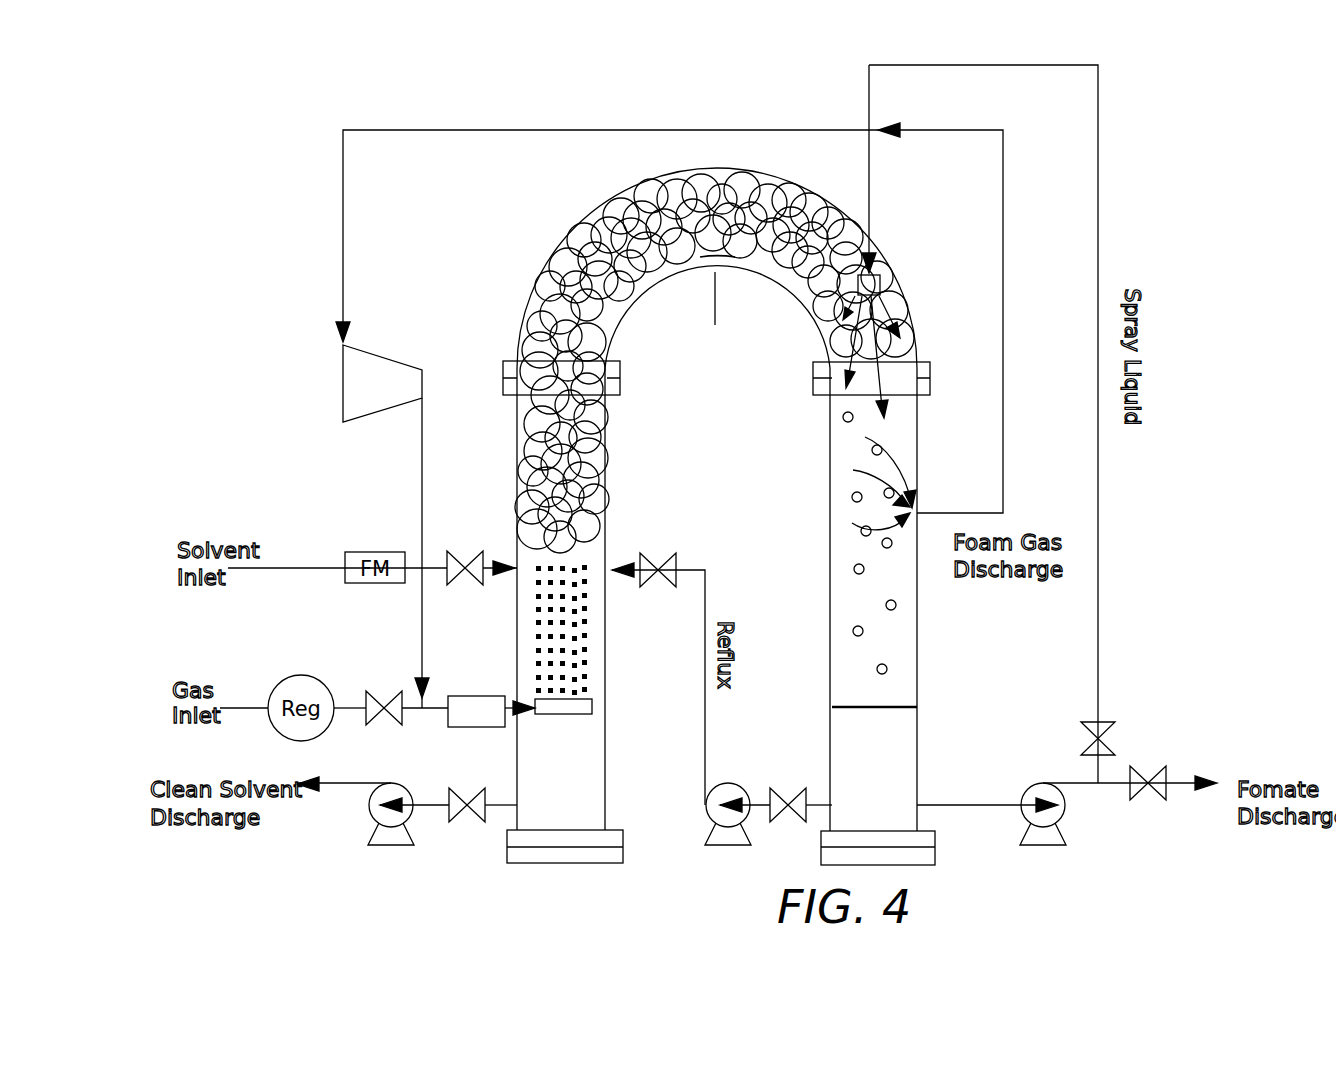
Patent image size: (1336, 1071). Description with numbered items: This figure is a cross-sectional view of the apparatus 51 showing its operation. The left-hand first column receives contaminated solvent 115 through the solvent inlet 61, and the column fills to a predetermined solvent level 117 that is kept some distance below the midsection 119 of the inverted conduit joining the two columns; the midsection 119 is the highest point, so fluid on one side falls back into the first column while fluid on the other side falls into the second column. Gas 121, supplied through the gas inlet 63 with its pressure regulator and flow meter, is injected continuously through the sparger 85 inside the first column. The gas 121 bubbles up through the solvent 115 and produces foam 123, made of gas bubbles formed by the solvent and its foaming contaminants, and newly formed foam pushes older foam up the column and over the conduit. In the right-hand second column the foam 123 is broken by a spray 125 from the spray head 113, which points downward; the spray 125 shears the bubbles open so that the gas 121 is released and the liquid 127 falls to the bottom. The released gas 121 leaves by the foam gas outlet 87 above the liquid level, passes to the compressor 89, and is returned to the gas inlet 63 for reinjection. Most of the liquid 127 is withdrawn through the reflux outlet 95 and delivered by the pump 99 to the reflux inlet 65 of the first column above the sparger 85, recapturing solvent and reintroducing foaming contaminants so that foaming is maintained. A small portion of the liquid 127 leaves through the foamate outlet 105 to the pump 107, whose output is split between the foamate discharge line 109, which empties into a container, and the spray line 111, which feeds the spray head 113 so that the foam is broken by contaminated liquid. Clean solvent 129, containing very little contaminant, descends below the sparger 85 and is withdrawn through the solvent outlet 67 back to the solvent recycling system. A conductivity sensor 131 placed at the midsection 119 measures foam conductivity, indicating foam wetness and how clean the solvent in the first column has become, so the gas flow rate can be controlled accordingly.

The apparatus 51 is at (673, 112).
The solvent inlet 61 is at (505, 580).
The gas inlet 63 is at (512, 698).
The reflux inlet 65 is at (622, 578).
The solvent outlet 67 is at (512, 795).
The sparger 85 is at (572, 715).
The foam gas outlet 87 is at (933, 513).
The compressor 89 is at (368, 345).
The reflux outlet 95 is at (823, 800).
The pump 99 is at (733, 783).
The foamate outlet 105 is at (940, 805).
The pump 107 is at (1033, 783).
The foamate discharge line 109 is at (1178, 778).
The spray line 111 is at (1100, 665).
The spray head 113 is at (882, 285).
The solvent 115 is at (597, 572).
The solvent level 117 is at (522, 545).
The midsection 119 is at (727, 262).
The gas 121 is at (585, 662).
The foam 123 is at (571, 244).
The spray 125 is at (896, 318).
The liquid 127 is at (864, 568).
The clean solvent 129 is at (578, 806).
The conductivity sensor 131 is at (693, 262).